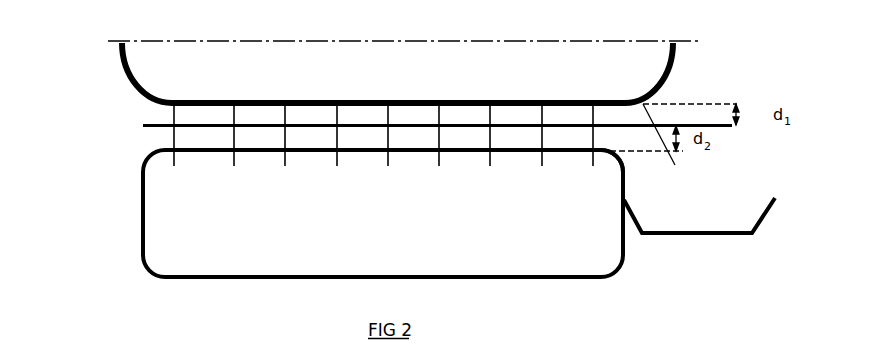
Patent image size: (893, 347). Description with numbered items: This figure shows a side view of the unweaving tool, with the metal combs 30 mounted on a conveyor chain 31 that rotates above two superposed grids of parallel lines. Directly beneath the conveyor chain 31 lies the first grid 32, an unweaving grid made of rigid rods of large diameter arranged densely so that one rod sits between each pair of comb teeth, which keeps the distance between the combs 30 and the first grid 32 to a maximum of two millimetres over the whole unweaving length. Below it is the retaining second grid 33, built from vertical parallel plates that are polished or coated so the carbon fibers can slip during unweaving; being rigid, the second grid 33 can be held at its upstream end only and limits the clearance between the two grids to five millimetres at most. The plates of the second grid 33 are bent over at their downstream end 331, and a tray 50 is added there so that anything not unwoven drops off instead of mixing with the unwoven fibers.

The metal combs 30 is at (170, 140).
The conveyor chain 31 is at (677, 65).
The first grid 32 is at (732, 126).
The second grid 33 is at (600, 280).
The downstream end 331 is at (612, 165).
The tray 50 is at (728, 236).